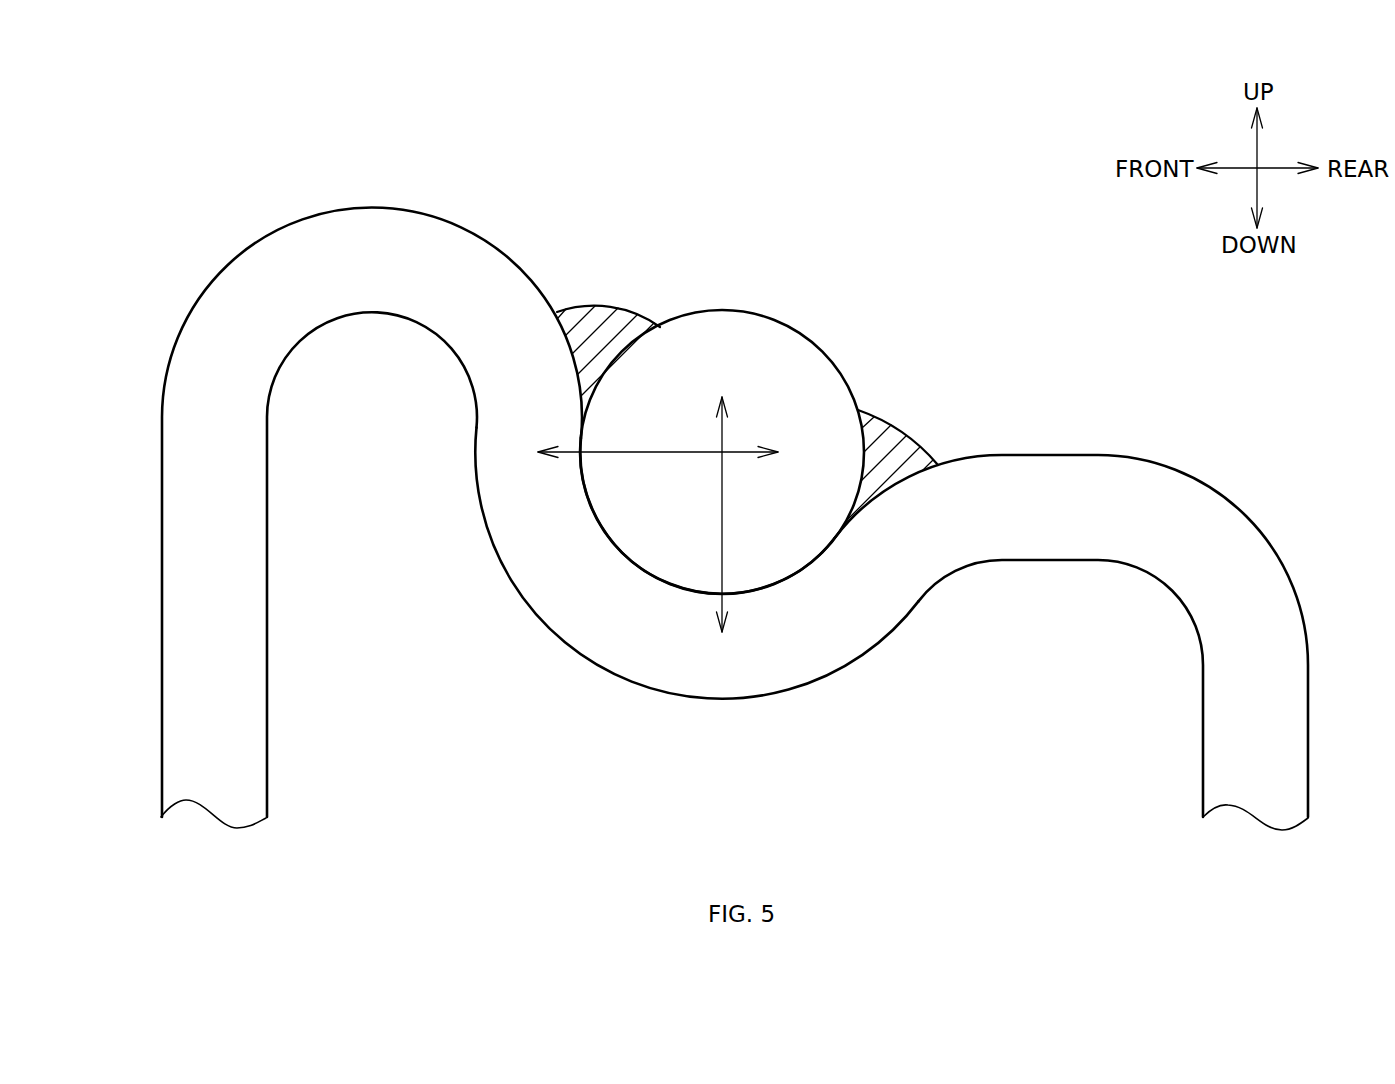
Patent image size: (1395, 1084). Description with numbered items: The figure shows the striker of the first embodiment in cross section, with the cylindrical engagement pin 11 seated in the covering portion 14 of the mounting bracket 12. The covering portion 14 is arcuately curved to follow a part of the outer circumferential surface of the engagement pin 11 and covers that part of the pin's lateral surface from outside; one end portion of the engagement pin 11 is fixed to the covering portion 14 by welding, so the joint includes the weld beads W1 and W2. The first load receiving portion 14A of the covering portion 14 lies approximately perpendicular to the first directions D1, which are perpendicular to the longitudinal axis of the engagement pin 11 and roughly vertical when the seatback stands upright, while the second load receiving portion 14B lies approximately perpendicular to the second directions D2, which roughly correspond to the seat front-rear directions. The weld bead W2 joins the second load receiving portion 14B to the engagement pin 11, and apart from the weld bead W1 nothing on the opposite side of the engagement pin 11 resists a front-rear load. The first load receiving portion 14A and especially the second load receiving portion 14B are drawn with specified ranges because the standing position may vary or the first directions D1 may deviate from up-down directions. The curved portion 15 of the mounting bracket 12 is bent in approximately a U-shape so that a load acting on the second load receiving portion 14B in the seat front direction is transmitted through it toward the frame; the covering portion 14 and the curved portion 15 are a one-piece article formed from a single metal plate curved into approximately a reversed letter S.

The engagement pin 11 is at (732, 312).
The mounting bracket 12 is at (1243, 518).
The covering portion 14 is at (310, 419).
The first load receiving portion 14A is at (761, 594).
The second load receiving portion 14B is at (585, 490).
The curved portion 15 is at (115, 417).
The weld bead W1 is at (913, 432).
The weld bead W2 is at (621, 308).
The first directions D1 is at (723, 518).
The second directions D2 is at (658, 452).